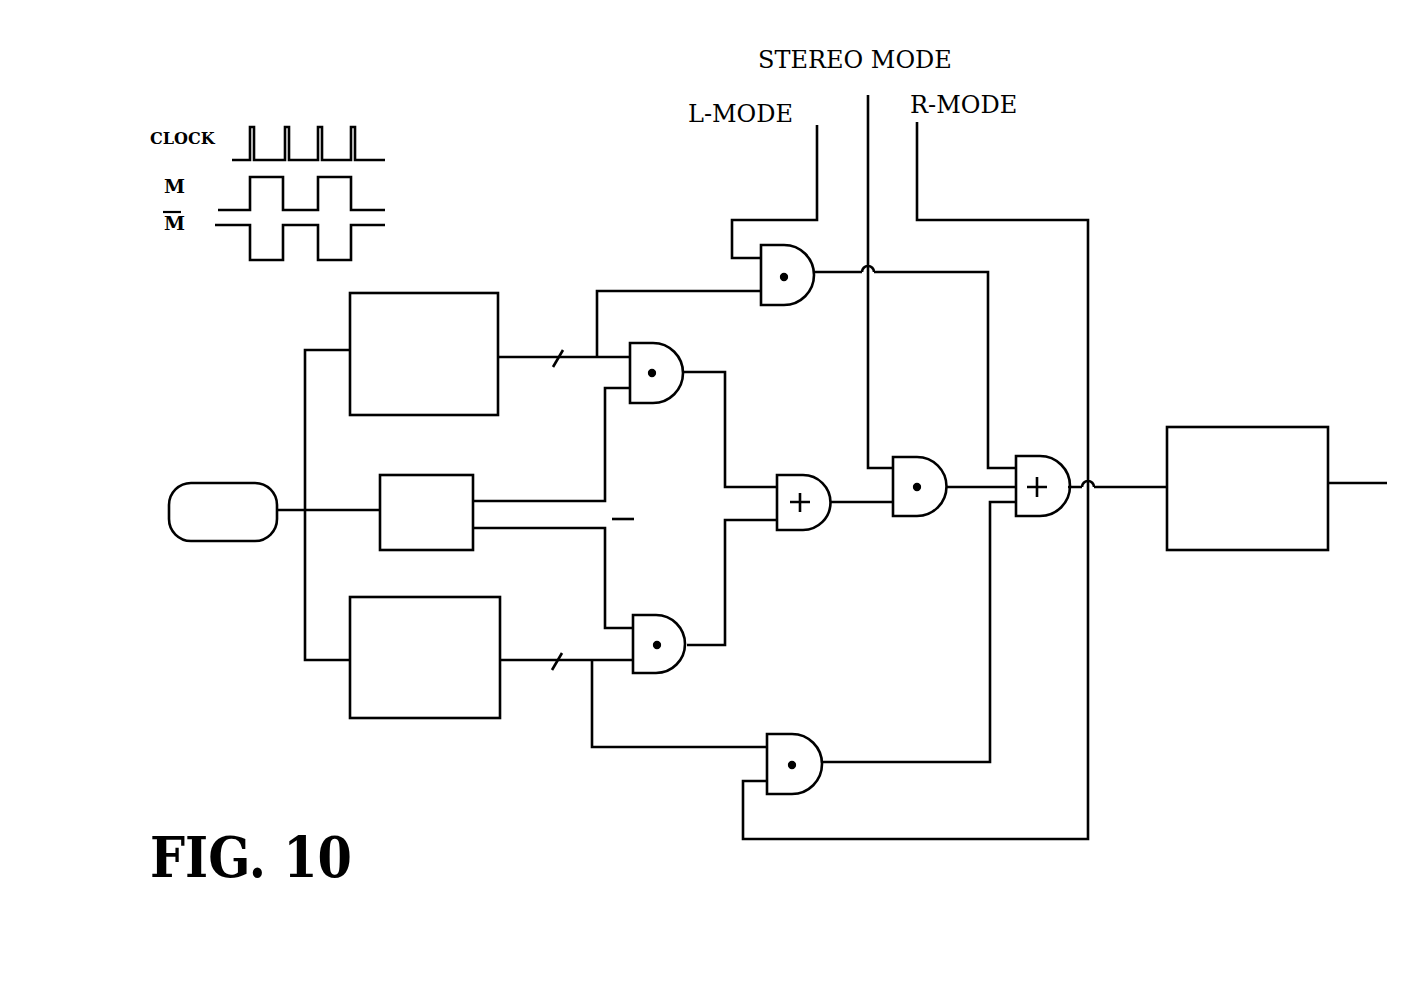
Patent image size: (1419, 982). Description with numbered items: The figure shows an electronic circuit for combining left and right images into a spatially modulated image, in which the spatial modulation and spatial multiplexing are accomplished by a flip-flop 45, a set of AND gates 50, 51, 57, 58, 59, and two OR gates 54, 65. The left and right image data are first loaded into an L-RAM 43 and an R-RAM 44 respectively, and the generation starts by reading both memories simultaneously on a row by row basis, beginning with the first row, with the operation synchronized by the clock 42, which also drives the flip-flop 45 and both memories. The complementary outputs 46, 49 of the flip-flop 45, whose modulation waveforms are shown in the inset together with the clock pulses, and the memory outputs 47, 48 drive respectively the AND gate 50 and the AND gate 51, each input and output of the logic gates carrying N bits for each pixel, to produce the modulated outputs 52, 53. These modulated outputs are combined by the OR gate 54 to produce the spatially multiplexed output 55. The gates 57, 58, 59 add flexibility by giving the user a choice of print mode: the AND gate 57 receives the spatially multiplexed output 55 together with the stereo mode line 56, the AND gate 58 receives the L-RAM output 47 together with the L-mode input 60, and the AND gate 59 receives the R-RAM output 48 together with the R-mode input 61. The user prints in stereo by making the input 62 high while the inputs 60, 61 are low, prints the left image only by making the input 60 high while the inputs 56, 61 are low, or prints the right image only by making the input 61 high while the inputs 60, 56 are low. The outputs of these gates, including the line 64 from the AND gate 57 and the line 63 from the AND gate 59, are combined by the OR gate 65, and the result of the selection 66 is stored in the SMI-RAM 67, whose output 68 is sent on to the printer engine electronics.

The clock 42 is at (203, 481).
The L-RAM 43 is at (424, 354).
The R-RAM 44 is at (425, 657).
The flip-flop 45 is at (426, 512).
The complementary output 46 is at (533, 499).
The memory output 47 is at (523, 360).
The memory output 48 is at (527, 665).
The complementary output 49 is at (536, 531).
The AND gate 50 is at (657, 355).
The AND gate 51 is at (651, 615).
The modulated output 52 is at (745, 484).
The modulated output 53 is at (752, 523).
The OR gate 54 is at (803, 525).
The spatially multiplexed output 55 is at (843, 497).
The stereo mode input 56 is at (869, 230).
The AND gate 57 is at (910, 508).
The AND gate 58 is at (781, 295).
The AND gate 59 is at (788, 732).
The L-mode input 60 is at (781, 218).
The R-mode input 61 is at (965, 220).
The stereo selection input 62 is at (955, 277).
The AND gate 59 output 63 is at (945, 760).
The AND gate 57 output 64 is at (966, 480).
The OR gate 65 is at (1030, 458).
The result of the selection 66 is at (1130, 481).
The SMI-RAM 67 is at (1247, 488).
The SMI-RAM output 68 is at (1345, 485).